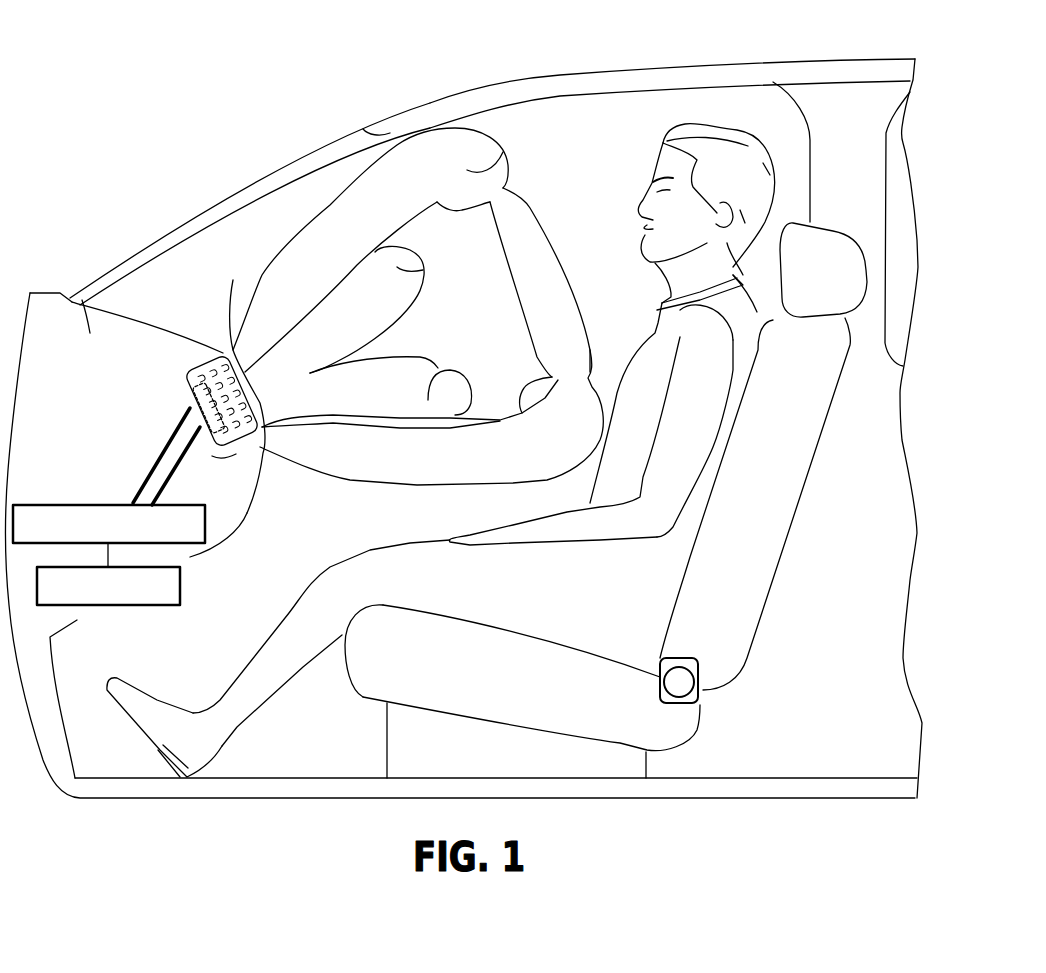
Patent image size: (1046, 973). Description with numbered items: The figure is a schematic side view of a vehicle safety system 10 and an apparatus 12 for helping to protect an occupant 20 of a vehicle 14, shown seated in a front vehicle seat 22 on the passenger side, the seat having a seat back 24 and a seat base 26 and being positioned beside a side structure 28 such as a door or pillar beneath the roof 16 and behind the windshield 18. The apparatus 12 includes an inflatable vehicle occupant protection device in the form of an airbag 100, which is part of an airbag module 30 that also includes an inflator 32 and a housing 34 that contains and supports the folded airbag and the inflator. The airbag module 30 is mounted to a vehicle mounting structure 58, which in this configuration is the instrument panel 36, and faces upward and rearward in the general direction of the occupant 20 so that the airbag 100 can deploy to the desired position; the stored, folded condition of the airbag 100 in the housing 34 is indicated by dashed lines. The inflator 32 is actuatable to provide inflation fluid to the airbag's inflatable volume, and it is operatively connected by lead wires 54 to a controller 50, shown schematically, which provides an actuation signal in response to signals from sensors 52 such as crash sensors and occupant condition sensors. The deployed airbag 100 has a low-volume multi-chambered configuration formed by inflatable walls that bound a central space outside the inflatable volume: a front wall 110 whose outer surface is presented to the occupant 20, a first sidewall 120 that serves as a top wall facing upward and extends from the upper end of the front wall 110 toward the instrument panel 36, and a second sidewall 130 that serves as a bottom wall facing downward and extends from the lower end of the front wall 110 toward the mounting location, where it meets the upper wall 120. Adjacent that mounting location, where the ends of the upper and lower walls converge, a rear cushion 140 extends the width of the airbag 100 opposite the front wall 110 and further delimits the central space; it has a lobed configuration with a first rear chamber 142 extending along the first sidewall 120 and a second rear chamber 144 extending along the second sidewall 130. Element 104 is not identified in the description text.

The vehicle safety system 10 is at (359, 313).
The apparatus 12 is at (359, 313).
The vehicle 14 is at (197, 93).
The roof 16 is at (580, 86).
The windshield 18 is at (153, 245).
The occupant 20 is at (730, 122).
The vehicle seat 22 is at (606, 500).
The seat back 24 is at (740, 585).
The seat base 26 is at (525, 668).
The side structure 28 is at (848, 140).
The airbag module 30 is at (252, 375).
The inflator 32 is at (185, 388).
The housing 34 is at (236, 458).
The instrument panel 36 is at (83, 299).
The controller 50 is at (40, 504).
The sensors 52 is at (122, 607).
The lead wires 54 is at (160, 483).
The mounting structure 58 is at (220, 503).
The airbag 100 is at (509, 150).
The cover 104 is at (228, 350).
The front wall 110 is at (537, 282).
The first sidewall 120 is at (357, 220).
The second sidewall 130 is at (437, 450).
The rear cushion 140 is at (307, 387).
The first rear chamber 142 is at (424, 268).
The second rear chamber 144 is at (437, 373).